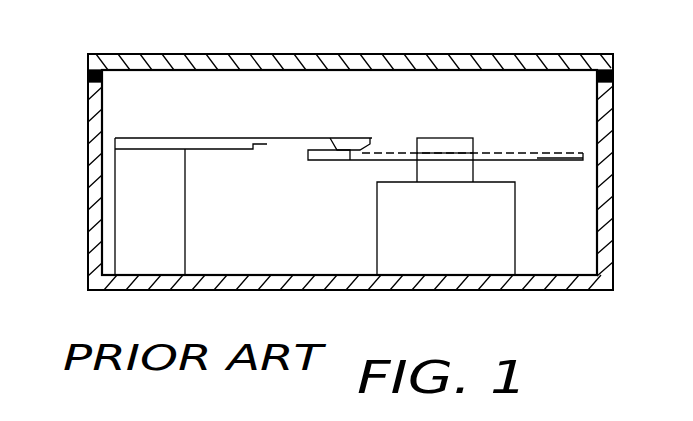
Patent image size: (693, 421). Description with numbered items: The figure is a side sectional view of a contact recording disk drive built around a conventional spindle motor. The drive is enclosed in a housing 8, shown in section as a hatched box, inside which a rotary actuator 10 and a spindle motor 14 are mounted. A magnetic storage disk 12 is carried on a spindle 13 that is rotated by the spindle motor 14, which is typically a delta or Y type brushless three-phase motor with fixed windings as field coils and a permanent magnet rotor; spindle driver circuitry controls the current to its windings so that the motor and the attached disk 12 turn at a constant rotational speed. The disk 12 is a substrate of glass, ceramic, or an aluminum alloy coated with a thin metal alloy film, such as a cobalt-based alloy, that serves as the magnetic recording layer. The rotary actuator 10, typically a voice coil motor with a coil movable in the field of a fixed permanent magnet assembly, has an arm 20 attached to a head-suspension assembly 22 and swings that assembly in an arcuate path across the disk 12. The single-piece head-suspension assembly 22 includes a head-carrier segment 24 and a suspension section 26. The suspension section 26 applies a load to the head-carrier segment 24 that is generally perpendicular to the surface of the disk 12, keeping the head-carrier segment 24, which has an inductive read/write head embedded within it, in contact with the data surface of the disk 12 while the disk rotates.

The housing 8 is at (605, 205).
The rotary actuator 10 is at (152, 267).
The magnetic storage disk 12 is at (583, 160).
The spindle 13 is at (443, 138).
The spindle motor 14 is at (457, 267).
The arm 20 is at (188, 138).
The head-suspension assembly 22 is at (372, 131).
The head-carrier segment 24 is at (348, 152).
The suspension section 26 is at (283, 144).